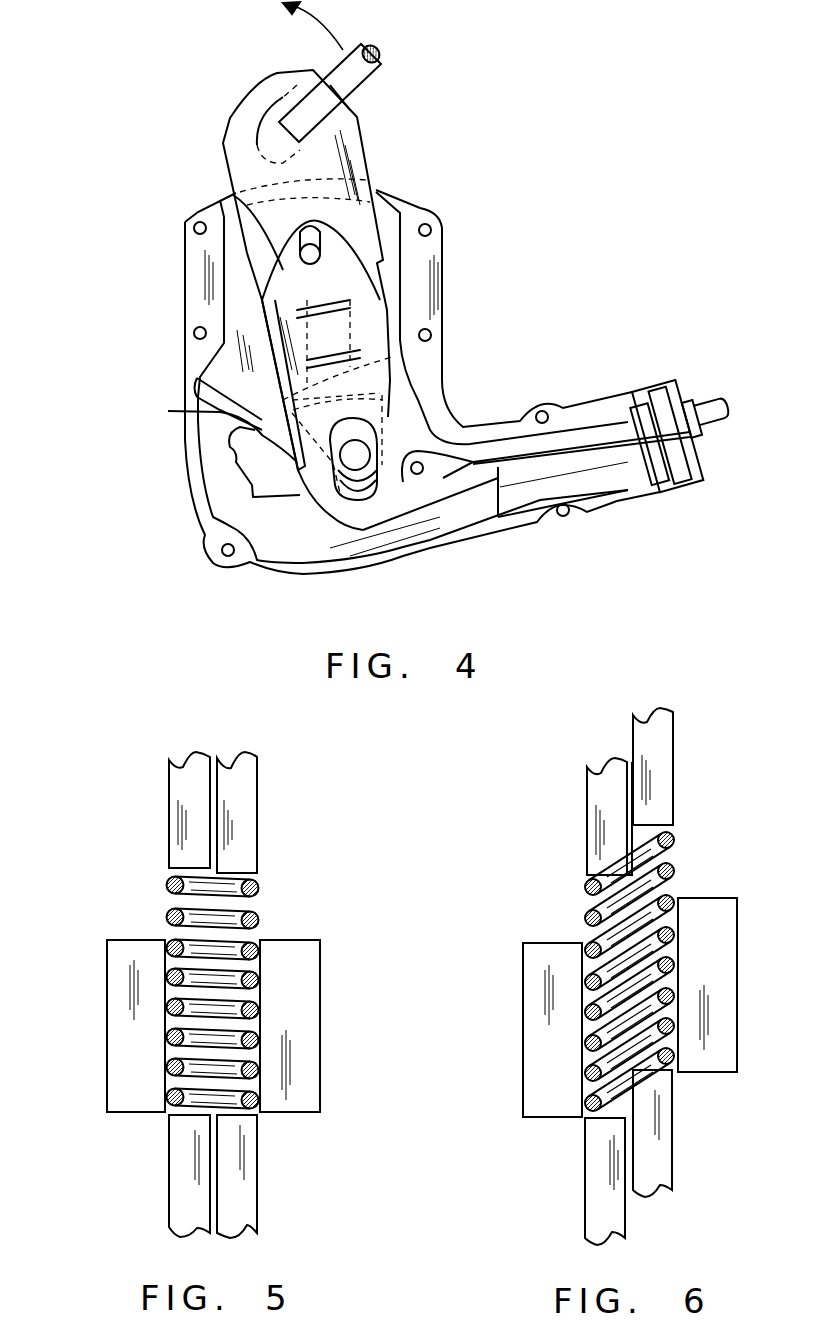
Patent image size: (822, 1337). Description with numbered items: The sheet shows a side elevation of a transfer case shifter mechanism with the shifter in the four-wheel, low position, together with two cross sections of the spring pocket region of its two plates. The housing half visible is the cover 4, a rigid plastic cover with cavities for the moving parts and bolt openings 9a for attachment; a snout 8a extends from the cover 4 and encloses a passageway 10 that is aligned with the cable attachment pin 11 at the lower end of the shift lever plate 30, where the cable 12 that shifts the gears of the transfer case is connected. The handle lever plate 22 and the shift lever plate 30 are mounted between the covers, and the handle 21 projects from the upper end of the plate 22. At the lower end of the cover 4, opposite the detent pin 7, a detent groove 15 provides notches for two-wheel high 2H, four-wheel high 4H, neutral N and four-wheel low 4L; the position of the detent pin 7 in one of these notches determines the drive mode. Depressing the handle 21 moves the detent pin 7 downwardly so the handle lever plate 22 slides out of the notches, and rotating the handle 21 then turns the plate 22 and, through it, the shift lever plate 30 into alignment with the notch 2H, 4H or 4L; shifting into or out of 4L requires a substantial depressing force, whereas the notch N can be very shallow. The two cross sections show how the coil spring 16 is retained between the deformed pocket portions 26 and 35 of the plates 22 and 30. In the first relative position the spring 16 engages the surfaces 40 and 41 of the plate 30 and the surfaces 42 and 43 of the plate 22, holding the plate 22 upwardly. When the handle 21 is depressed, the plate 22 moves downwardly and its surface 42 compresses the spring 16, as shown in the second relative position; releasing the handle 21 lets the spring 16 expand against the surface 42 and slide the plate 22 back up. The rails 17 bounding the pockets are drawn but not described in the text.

In FIG. 4, the cover 4 is at (433, 257).
In FIG. 4, the detent pin 7 is at (355, 470).
In FIG. 4, the snout 8a is at (595, 410).
In FIG. 4, the bolt holes 9a is at (192, 325).
In FIG. 4, the passageway 10 is at (500, 452).
In FIG. 4, the cable attachment pin 11 is at (417, 477).
In FIG. 4, the cable 12 is at (610, 452).
In FIG. 4, the detent groove 15 is at (237, 448).
In FIG. 5, the spring 16 is at (262, 985).
In FIG. 6, the spring 16 is at (680, 945).
In FIG. 5, the shift rails 17 is at (213, 795).
In FIG. 6, the shift rails 17 is at (628, 778).
In FIG. 4, the handle 21 is at (382, 62).
In FIG. 4, the handle lever plate 22 is at (367, 170).
In FIG. 5, the handle lever plate 22 is at (178, 1183).
In FIG. 6, the handle lever plate 22 is at (597, 785).
In FIG. 5, the deformed portion 26 is at (115, 973).
In FIG. 6, the deformed portion 26 is at (533, 1023).
In FIG. 4, the shift lever plate 30 is at (233, 195).
In FIG. 5, the shift lever plate 30 is at (257, 1193).
In FIG. 6, the shift lever plate 30 is at (663, 792).
In FIG. 5, the deformed portion 35 is at (310, 1015).
In FIG. 6, the deformed portion 35 is at (728, 995).
In FIG. 5, the surface 40 is at (253, 886).
In FIG. 6, the surface 40 is at (647, 832).
In FIG. 5, the surface 41 is at (243, 1117).
In FIG. 6, the surface 41 is at (650, 1070).
In FIG. 5, the surface 42 is at (187, 868).
In FIG. 6, the surface 42 is at (587, 863).
In FIG. 5, the surface 43 is at (188, 1115).
In FIG. 6, the surface 43 is at (597, 1118).
In FIG. 4, the 2-wheel high notch 2H is at (168, 411).
In FIG. 4, the 4-wheel high notch 4H is at (200, 379).
In FIG. 4, the 4-wheel low notch 4L is at (358, 440).
In FIG. 4, the neutral notch N is at (305, 466).